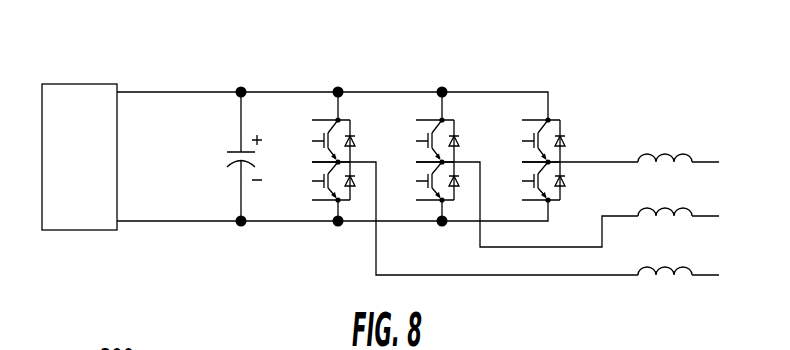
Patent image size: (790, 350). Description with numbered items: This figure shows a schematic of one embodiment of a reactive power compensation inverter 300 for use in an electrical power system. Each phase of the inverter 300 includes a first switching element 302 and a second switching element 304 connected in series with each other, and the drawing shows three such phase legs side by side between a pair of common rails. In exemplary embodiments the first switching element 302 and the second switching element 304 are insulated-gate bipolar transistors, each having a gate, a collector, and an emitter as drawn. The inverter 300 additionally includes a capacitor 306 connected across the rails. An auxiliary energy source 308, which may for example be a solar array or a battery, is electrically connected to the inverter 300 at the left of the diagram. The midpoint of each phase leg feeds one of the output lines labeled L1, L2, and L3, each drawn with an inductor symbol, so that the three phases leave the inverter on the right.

The reactive power compensation inverter 300 is at (146, 80).
The first switching element 302 is at (301, 110).
The second switching element 304 is at (292, 204).
The capacitor 306 is at (222, 120).
The auxiliary energy source 308 is at (97, 170).
The phase inductor L1 is at (639, 137).
The phase inductor L2 is at (586, 204).
The phase inductor L3 is at (534, 218).